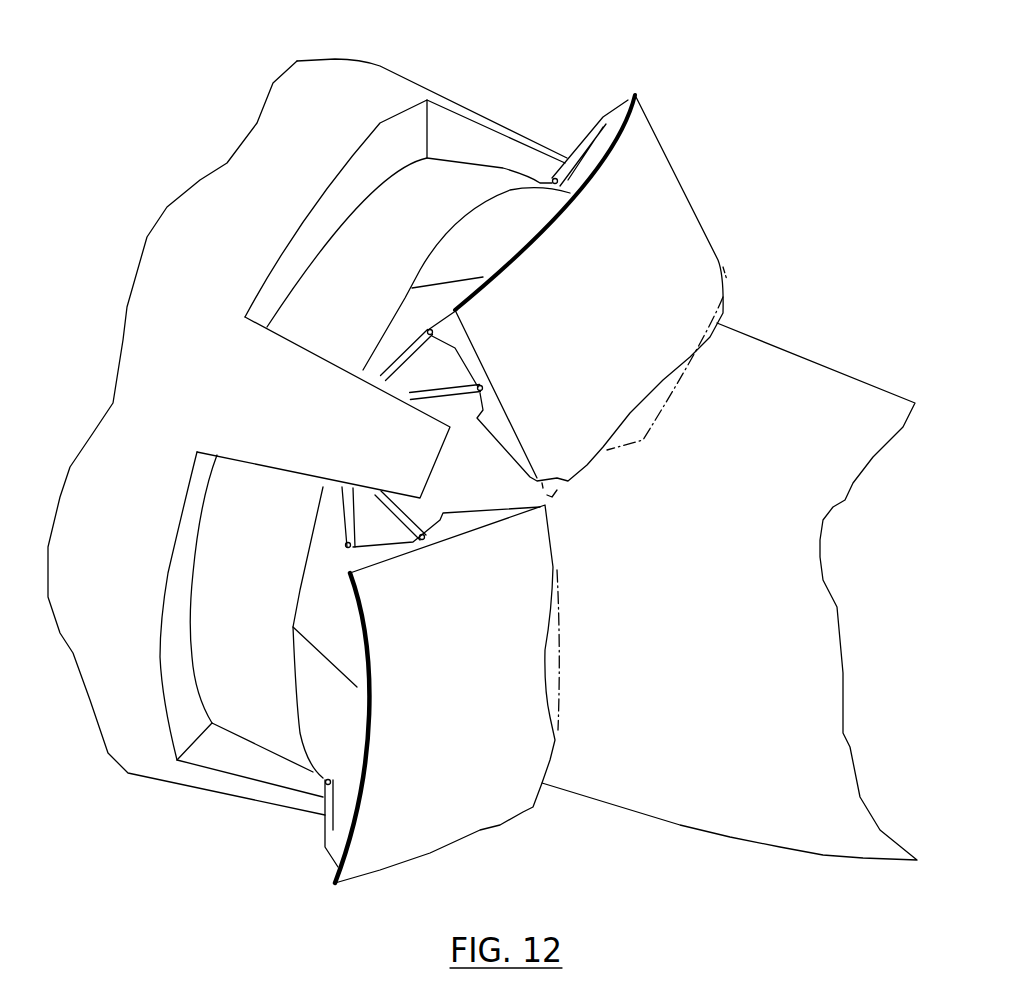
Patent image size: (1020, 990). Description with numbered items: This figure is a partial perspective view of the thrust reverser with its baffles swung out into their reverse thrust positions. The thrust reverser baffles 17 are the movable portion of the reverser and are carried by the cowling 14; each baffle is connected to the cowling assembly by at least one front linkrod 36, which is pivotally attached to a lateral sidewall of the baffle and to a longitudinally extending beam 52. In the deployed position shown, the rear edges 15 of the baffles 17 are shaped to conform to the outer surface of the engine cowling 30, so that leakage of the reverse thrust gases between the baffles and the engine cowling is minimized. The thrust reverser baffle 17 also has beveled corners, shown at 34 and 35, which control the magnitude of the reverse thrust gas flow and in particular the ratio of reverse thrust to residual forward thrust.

The cowling 14 is at (337, 95).
The rear edge 15 is at (545, 660).
The thrust reverser baffle 17 is at (648, 187).
The engine cowling 30 is at (793, 399).
The beveled corner 34 is at (560, 482).
The beveled corner 35 is at (723, 288).
The front linkrod 36 is at (328, 810).
The longitudinally extending beam 52 is at (378, 439).